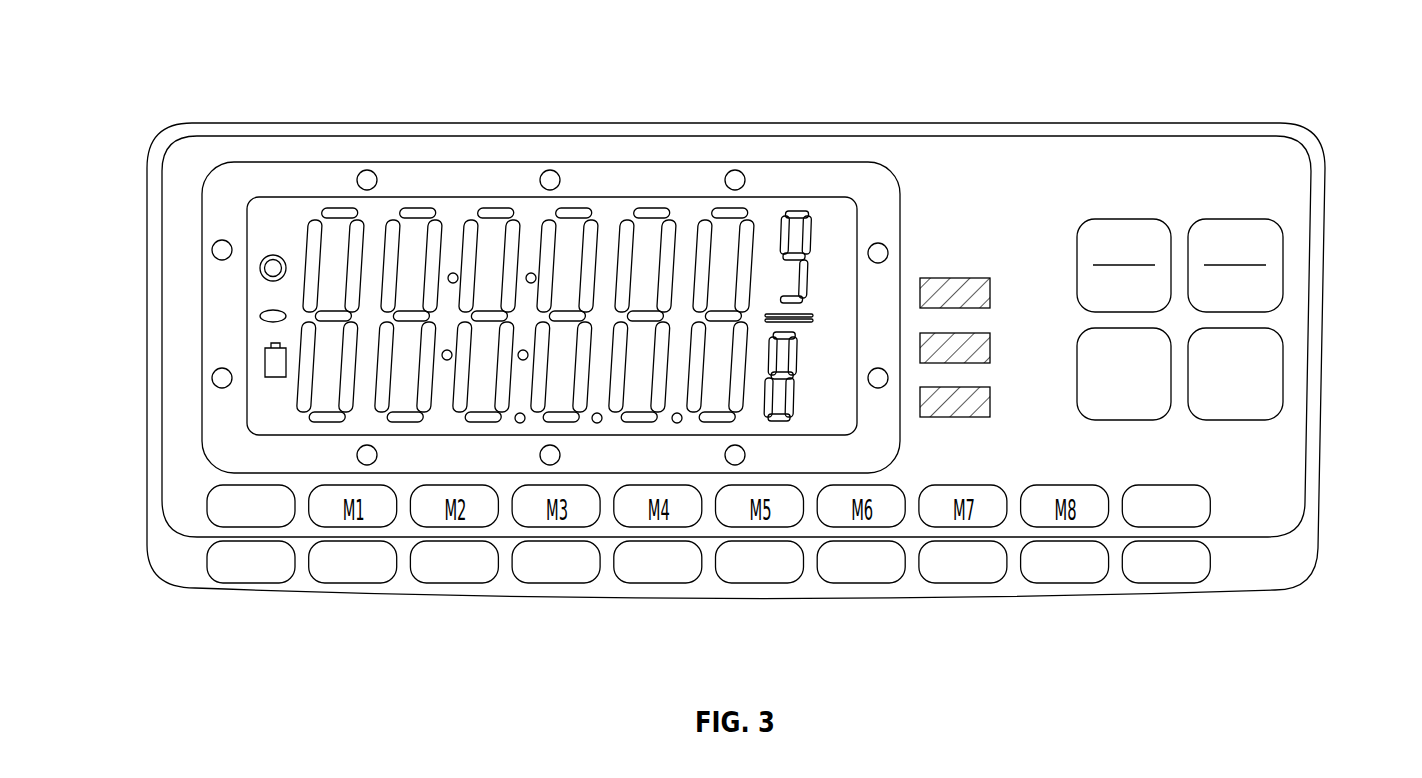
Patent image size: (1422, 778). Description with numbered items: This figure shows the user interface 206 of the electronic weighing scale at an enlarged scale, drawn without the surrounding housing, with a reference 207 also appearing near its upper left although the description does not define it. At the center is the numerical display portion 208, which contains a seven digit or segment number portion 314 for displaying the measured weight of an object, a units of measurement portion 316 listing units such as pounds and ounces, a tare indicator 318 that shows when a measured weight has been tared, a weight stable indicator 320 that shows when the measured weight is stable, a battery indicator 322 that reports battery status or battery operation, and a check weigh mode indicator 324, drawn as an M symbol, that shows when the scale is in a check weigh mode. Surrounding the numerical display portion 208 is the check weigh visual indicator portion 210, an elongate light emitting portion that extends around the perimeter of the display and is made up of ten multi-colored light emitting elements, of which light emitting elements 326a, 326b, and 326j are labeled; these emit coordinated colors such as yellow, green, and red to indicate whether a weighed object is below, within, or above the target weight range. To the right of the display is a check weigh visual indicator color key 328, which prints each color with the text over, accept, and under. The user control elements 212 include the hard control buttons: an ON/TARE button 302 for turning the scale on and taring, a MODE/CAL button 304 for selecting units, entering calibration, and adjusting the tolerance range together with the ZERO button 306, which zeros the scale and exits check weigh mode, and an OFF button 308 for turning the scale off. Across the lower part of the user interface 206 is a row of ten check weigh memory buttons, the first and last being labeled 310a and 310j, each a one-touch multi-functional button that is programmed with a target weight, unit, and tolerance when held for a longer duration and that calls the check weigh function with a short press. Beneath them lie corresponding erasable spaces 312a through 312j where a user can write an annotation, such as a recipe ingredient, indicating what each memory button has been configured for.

The user interface 206 is at (1298, 118).
The front face recess 207 is at (209, 157).
The numerical display portion 208 is at (460, 205).
The check weigh visual indicator portion 210 is at (292, 157).
The user control elements 212 is at (1335, 253).
The ON/TARE button 302 is at (1100, 228).
The MODE/CAL button 304 is at (1263, 248).
The ZERO button 306 is at (1153, 398).
The OFF button 308 is at (1263, 382).
The check weigh memory button 310a is at (222, 507).
The check weigh memory button 310j is at (1195, 502).
The erasable space 312a is at (252, 572).
The erasable space 312j is at (1177, 572).
The seven digit or segment number portion 314 is at (695, 205).
The units of measurement portion 316 is at (838, 205).
The tare indicator 318 is at (252, 222).
The weight stable indicator 320 is at (262, 268).
The battery indicator 322 is at (265, 360).
The check weigh mode indicator 324 is at (262, 410).
The light emitting element 326a is at (369, 171).
The light emitting element 326b is at (552, 171).
The light emitting element 326j is at (225, 255).
The check weigh visual indicator color key 328 is at (967, 262).